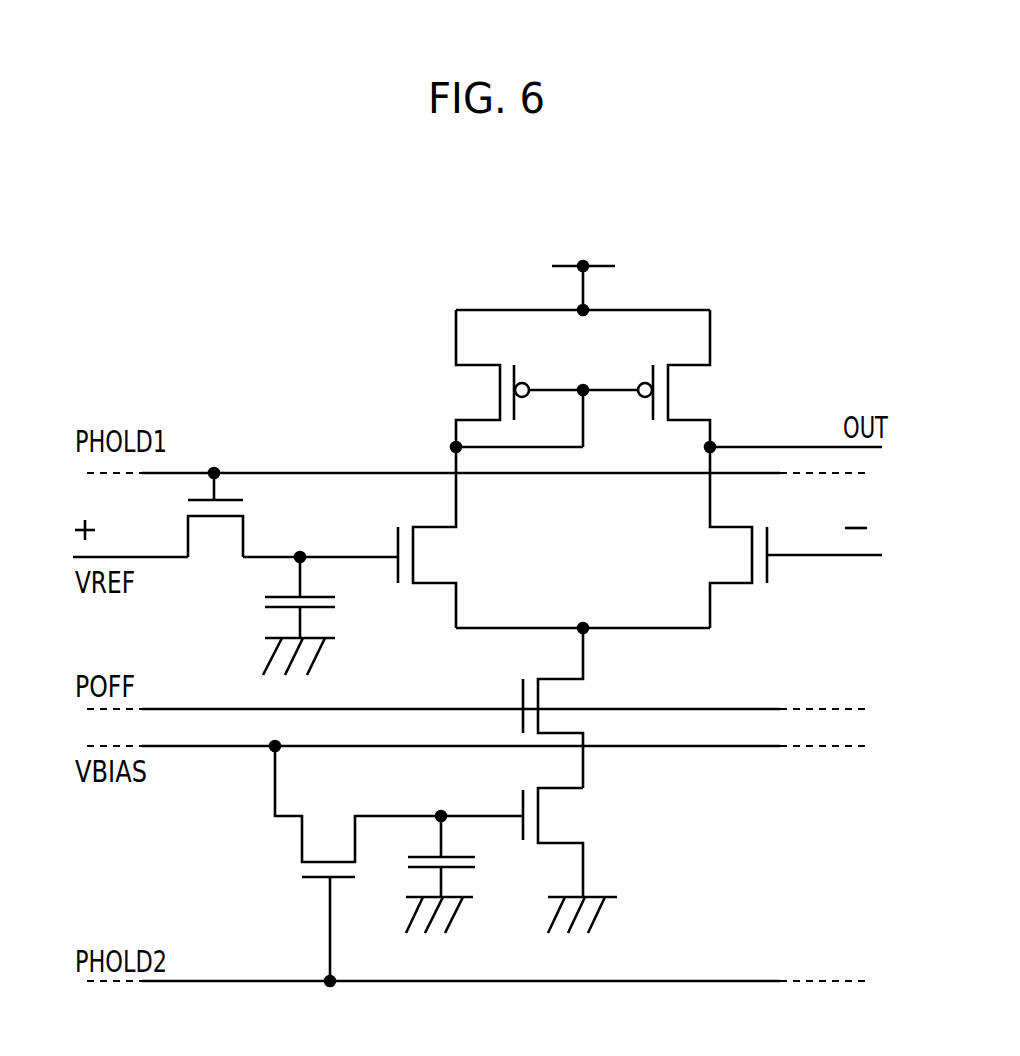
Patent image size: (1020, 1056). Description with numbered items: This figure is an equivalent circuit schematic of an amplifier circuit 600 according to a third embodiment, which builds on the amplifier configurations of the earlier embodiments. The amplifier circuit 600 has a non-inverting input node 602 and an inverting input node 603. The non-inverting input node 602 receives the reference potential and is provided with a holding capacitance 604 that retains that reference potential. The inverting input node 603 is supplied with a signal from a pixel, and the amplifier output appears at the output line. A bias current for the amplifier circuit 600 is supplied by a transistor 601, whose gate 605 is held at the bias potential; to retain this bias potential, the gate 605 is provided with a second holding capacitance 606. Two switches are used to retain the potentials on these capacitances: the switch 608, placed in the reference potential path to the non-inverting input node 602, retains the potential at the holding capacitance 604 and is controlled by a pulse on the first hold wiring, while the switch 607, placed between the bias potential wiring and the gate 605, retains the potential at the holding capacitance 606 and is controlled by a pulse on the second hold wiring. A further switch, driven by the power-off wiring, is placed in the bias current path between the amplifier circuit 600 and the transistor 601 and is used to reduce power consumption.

The amplifier circuit 600 is at (691, 266).
The transistor 601 is at (577, 823).
The non-inverting input node 602 is at (365, 557).
The inverting input node 603 is at (818, 555).
The holding capacitance 604 is at (343, 608).
The gate 605 is at (422, 815).
The holding capacitance 606 is at (403, 867).
The switch 607 is at (300, 835).
The switch 608 is at (245, 525).